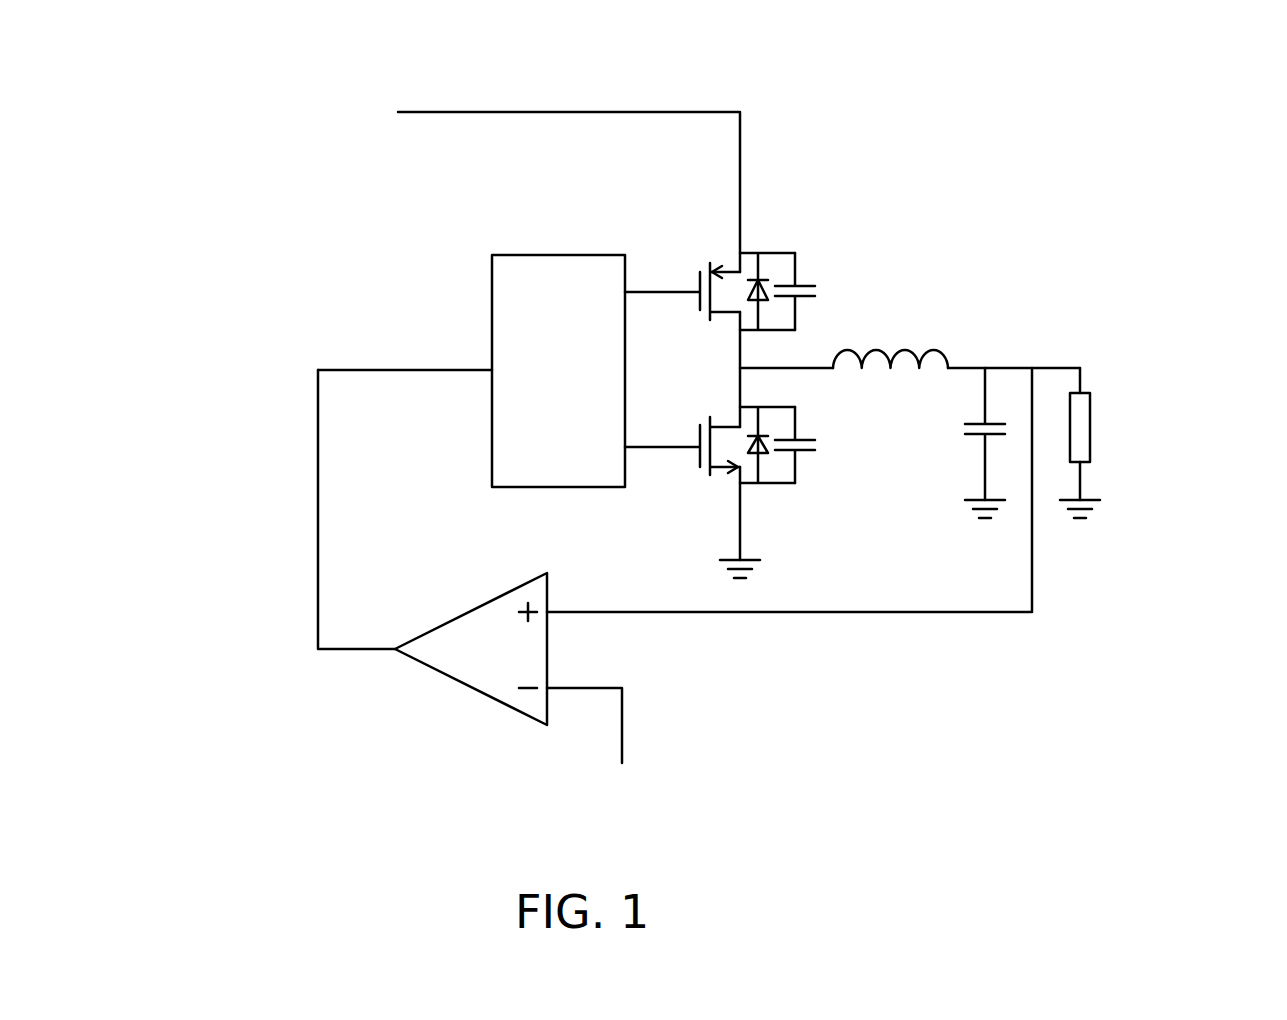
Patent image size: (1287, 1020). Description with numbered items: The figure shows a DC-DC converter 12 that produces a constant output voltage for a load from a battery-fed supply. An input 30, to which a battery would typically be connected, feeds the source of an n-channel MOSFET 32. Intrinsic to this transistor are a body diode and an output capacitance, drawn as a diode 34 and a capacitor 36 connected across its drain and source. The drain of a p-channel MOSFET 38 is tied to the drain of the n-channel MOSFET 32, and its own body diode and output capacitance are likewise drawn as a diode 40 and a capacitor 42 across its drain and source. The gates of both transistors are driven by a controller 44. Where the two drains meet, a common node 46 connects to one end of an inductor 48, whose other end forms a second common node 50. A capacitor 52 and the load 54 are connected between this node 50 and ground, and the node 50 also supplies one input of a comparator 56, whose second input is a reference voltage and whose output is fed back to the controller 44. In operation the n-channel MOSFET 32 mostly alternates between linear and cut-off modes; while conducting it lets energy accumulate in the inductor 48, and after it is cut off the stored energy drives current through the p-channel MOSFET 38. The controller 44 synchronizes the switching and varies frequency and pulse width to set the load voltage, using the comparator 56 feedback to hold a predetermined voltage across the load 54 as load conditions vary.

The DC-DC converter 12 is at (1062, 202).
The input 30 is at (475, 93).
The n-channel MOSFET 32 is at (688, 278).
The diode 34 is at (762, 275).
The capacitor 36 is at (803, 283).
The p-channel MOSFET 38 is at (687, 460).
The diode 40 is at (770, 450).
The capacitor 42 is at (803, 455).
The controller 44 is at (473, 303).
The common node 46 is at (728, 362).
The inductor 48 is at (908, 337).
The second common node 50 is at (1008, 352).
The capacitor 52 is at (977, 443).
The load 54 is at (1095, 412).
The comparator 56 is at (433, 688).